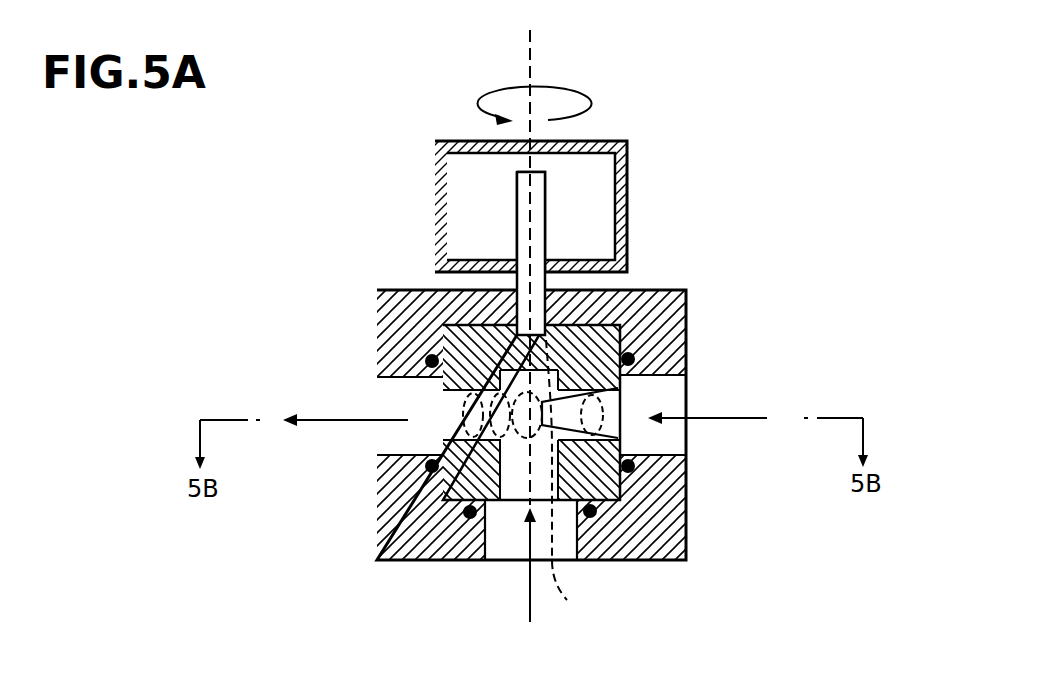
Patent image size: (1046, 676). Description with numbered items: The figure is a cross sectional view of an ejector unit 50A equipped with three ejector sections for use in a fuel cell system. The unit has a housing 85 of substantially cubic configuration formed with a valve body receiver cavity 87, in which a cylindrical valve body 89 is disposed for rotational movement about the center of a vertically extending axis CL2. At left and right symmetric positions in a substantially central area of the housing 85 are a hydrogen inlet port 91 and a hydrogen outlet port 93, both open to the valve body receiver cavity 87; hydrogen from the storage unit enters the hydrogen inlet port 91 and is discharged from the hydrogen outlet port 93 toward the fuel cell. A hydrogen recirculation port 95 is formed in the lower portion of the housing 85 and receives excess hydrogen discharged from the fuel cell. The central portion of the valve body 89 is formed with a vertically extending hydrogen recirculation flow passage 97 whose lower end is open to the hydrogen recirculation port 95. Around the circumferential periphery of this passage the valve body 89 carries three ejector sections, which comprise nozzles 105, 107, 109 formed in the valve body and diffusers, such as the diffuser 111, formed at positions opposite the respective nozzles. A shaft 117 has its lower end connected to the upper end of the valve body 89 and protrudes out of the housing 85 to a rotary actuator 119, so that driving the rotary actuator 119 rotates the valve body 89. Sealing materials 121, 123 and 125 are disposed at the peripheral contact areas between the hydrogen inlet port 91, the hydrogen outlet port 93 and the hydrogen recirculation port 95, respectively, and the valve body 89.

The ejector unit 50A is at (722, 110).
The rotary actuator 119 is at (446, 142).
The shaft 117 is at (546, 186).
The axis CL2 is at (540, 50).
The nozzle 105 is at (556, 352).
The valve body receiver cavity 87 is at (618, 325).
The housing 85 is at (686, 308).
The valve body 89 is at (630, 357).
The hydrogen inlet port 91 is at (677, 392).
The hydrogen outlet port 93 is at (383, 403).
The diffuser 111 is at (443, 448).
The sealing material 123 is at (437, 465).
The sealing material 121 is at (640, 466).
The hydrogen recirculation flow passage 97 is at (470, 492).
The sealing material 125 is at (468, 518).
The hydrogen recirculation port 95 is at (508, 548).
The nozzle 109 is at (570, 483).
The nozzle 107 is at (583, 415).